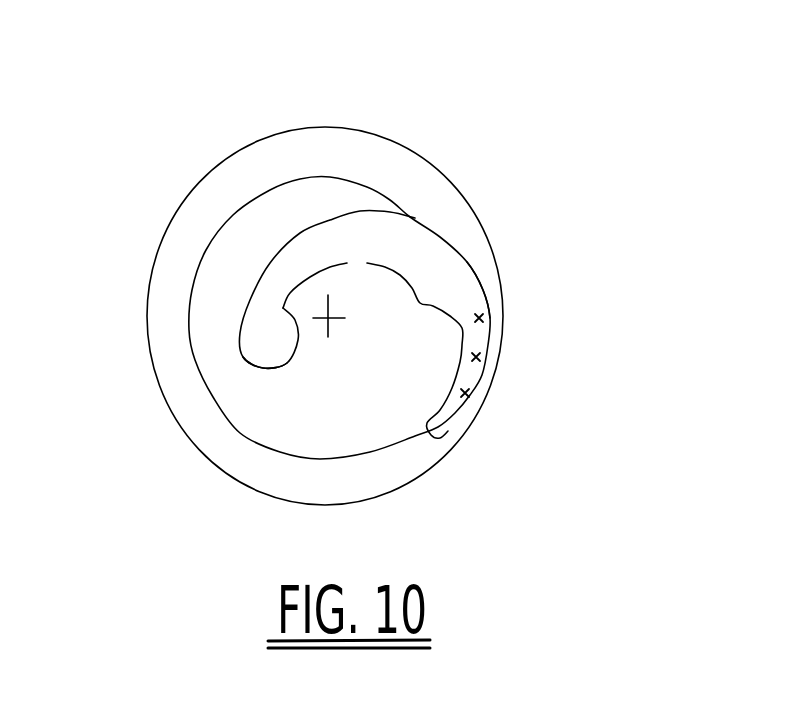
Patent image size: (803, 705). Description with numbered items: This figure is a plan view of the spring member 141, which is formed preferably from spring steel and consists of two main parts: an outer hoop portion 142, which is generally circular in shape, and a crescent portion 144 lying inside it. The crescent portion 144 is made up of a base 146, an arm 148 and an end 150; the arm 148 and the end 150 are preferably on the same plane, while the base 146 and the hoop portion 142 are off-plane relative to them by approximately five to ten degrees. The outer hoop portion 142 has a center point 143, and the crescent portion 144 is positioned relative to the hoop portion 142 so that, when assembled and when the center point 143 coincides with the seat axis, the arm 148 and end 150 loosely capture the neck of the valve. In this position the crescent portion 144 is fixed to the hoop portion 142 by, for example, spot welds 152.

The spring member 141 is at (505, 217).
The outer hoop portion 142 is at (397, 158).
The center point 143 is at (333, 325).
The crescent portion 144 is at (425, 260).
The base 146 is at (480, 293).
The arm 148 is at (328, 242).
The end 150 is at (255, 348).
The spot welds 152 is at (483, 318).